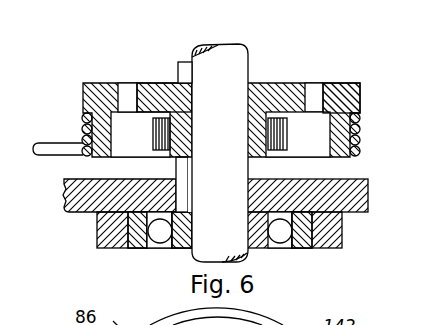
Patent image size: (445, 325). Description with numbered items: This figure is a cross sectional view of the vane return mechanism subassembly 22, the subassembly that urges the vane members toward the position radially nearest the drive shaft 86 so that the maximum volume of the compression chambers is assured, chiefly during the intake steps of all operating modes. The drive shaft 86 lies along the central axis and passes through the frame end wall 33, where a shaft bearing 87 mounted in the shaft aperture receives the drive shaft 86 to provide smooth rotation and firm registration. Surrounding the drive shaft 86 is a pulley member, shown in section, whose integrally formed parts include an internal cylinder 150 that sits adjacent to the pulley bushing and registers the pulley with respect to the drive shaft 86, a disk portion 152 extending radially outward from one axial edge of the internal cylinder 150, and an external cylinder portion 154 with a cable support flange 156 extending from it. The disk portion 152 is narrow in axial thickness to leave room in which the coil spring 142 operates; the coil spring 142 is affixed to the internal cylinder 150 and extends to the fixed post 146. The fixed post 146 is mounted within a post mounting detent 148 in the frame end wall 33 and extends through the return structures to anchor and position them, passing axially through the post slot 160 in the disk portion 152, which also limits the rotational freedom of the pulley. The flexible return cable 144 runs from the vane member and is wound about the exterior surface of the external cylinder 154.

The vane return mechanism subassembly 22 is at (226, 95).
The frame end wall 33 is at (357, 200).
The drive shaft 86 is at (250, 70).
The shaft bearing 87 is at (307, 251).
The coil spring 142 is at (289, 134).
The return cable 144 is at (64, 142).
The fixed post 146 is at (177, 67).
The post mounting detent 148 is at (174, 182).
The internal cylinder 150 is at (260, 123).
The disk portion 152 is at (147, 83).
The external cylinder portion 154 is at (342, 136).
The cable support flange 156 is at (363, 95).
The post slot 160 is at (126, 102).